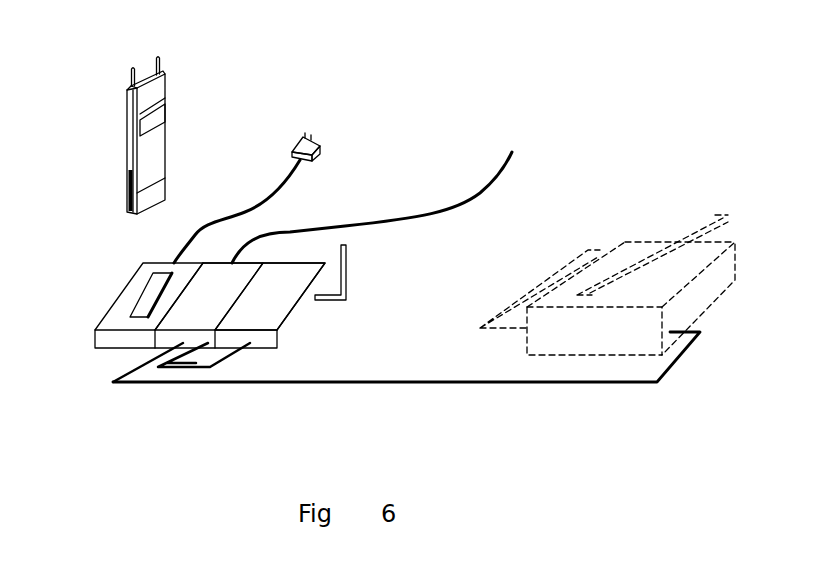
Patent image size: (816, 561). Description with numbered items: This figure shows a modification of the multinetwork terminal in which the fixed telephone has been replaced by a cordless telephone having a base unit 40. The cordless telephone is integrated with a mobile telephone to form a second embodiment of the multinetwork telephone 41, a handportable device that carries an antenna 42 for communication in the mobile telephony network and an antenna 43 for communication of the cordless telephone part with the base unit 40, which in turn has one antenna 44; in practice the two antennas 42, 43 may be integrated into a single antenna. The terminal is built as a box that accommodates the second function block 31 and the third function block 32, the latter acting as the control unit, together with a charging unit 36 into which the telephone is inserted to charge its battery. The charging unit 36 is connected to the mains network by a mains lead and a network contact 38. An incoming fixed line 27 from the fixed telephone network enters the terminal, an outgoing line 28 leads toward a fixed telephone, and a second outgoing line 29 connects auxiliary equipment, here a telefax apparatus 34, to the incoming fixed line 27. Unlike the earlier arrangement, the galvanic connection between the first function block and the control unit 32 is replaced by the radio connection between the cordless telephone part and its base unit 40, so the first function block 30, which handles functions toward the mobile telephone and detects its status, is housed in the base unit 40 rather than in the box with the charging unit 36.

The incoming fixed line 27 is at (493, 187).
The outgoing line 28 is at (200, 367).
The second outgoing line 29 is at (380, 382).
The first function block 30 is at (277, 308).
The second function block 31 is at (281, 250).
The third function block 32 is at (227, 280).
The telefax apparatus 34 is at (640, 242).
The charging unit 36 is at (120, 302).
The network contact 38 is at (295, 145).
The base unit 40 is at (283, 297).
The multinetwork telephone 41 is at (127, 135).
The antenna 42 is at (131, 70).
The antenna 43 is at (160, 66).
The antenna 44 is at (346, 283).